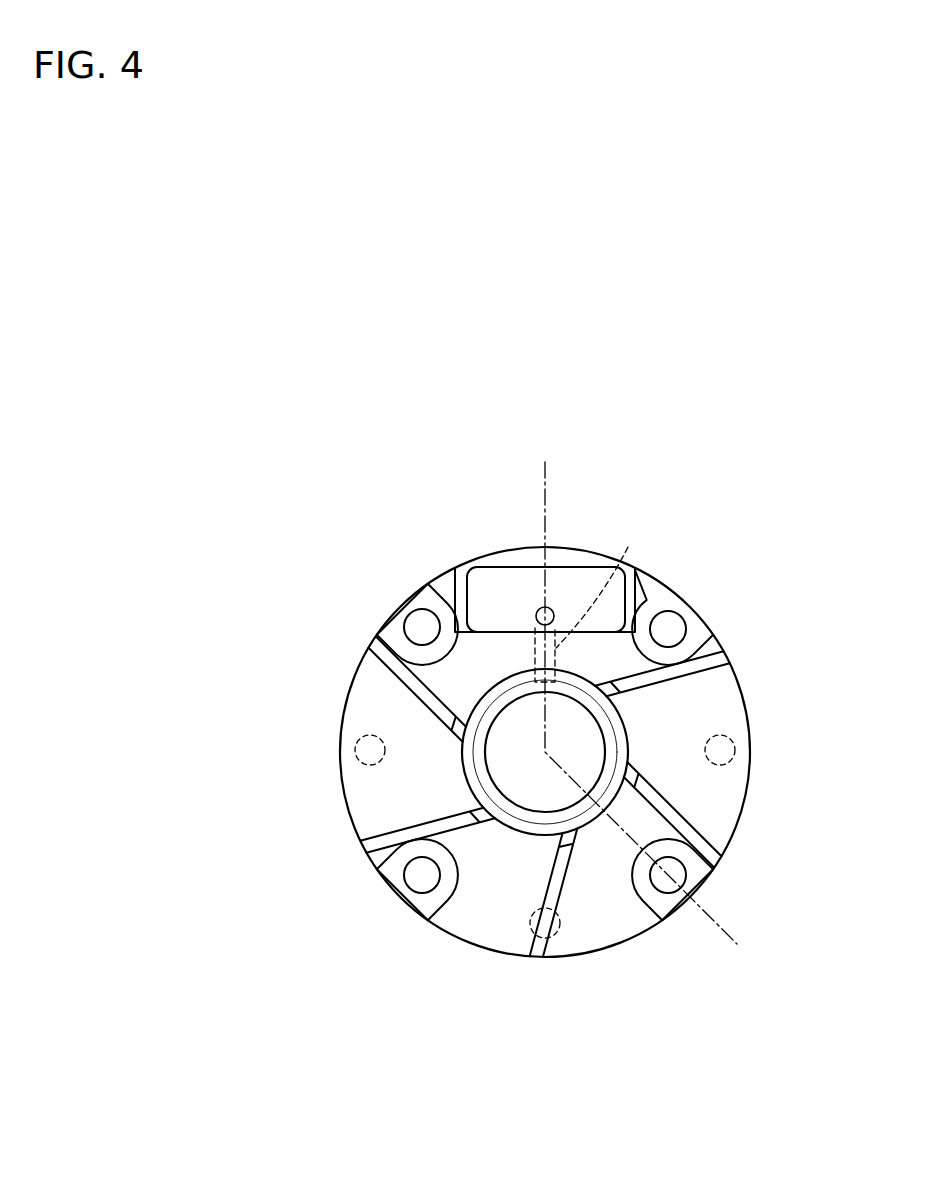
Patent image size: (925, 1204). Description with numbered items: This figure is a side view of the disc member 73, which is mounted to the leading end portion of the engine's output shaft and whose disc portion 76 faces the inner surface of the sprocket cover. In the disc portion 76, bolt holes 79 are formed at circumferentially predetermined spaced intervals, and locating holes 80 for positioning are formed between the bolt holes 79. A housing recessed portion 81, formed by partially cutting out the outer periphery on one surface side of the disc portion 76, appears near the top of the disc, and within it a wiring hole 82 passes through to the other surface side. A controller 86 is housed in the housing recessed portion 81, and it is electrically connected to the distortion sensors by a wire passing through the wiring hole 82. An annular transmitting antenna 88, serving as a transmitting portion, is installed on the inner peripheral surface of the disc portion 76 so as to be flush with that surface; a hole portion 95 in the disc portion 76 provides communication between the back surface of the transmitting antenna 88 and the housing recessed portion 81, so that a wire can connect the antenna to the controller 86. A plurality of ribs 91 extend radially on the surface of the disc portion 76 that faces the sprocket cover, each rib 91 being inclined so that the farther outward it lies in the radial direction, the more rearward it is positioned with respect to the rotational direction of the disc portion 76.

The disc member 73 is at (679, 579).
The disc portion 76 is at (725, 806).
The bolt holes 79 is at (414, 623).
The locating holes 80 is at (358, 745).
The housing recessed portion 81 is at (457, 592).
The wiring hole 82 is at (549, 608).
The controller 86 is at (512, 583).
The transmitting antenna 88 is at (515, 806).
The ribs 91 is at (377, 657).
The hole portion 95 is at (613, 562).